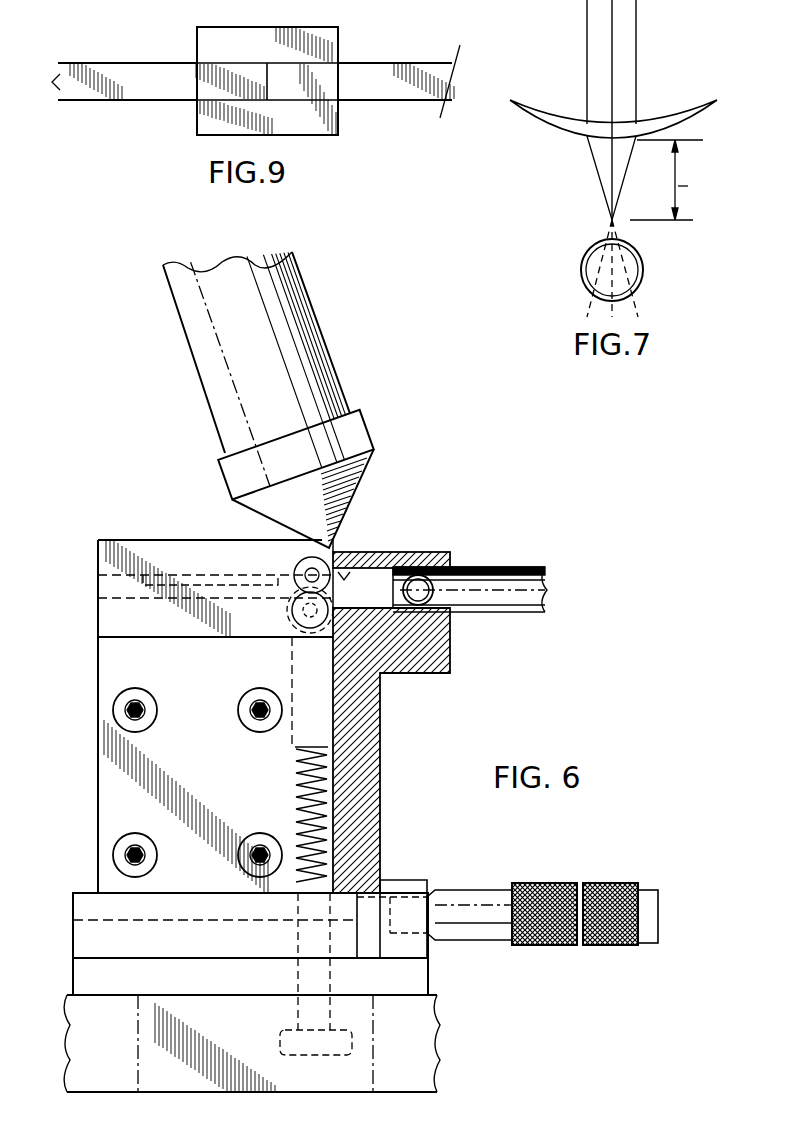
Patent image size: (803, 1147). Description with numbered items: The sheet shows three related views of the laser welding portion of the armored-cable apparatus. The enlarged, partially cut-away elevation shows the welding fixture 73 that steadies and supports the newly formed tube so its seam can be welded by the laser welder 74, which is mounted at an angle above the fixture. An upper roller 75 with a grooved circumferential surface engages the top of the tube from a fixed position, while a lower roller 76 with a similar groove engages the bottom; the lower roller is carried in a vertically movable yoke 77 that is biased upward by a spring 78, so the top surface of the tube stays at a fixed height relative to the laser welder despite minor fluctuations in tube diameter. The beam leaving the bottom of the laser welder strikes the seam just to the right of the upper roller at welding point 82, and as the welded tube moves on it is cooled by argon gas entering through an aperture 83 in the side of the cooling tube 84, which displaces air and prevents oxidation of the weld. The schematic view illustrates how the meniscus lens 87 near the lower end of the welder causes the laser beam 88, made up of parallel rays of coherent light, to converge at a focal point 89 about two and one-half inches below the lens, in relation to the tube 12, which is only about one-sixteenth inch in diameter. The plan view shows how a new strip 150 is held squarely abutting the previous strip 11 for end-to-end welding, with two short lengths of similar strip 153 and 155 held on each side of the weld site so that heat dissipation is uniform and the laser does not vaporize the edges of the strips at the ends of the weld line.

In FIG. 9, the strip 11 is at (378, 70).
In FIG. 9, the new strip 150 is at (145, 70).
In FIG. 9, the short length of similar strip 153 is at (206, 32).
In FIG. 9, the short length of similar strip 155 is at (313, 127).
In FIG. 7, the laser beam 88 is at (638, 30).
In FIG. 7, the meniscus lens 87 is at (553, 128).
In FIG. 7, the focal point 89 is at (611, 222).
In FIG. 7, the tube 12 is at (642, 272).
In FIG. 6, the welding fixture 73 is at (100, 772).
In FIG. 6, the laser welder 74 is at (337, 367).
In FIG. 6, the upper roller 75 is at (305, 566).
In FIG. 6, the lower roller 76 is at (290, 613).
In FIG. 6, the yoke 77 is at (292, 665).
In FIG. 6, the spring 78 is at (232, 588).
In FIG. 6, the welding point 82 is at (368, 552).
In FIG. 6, the aperture 83 is at (431, 552).
In FIG. 6, the cooling tube 84 is at (492, 567).